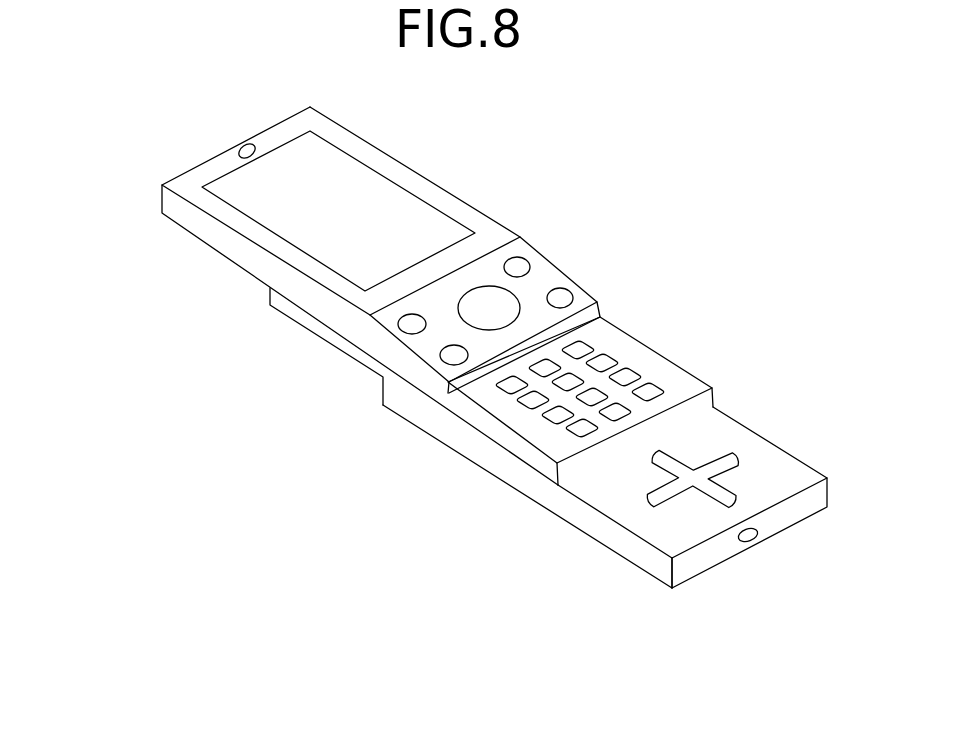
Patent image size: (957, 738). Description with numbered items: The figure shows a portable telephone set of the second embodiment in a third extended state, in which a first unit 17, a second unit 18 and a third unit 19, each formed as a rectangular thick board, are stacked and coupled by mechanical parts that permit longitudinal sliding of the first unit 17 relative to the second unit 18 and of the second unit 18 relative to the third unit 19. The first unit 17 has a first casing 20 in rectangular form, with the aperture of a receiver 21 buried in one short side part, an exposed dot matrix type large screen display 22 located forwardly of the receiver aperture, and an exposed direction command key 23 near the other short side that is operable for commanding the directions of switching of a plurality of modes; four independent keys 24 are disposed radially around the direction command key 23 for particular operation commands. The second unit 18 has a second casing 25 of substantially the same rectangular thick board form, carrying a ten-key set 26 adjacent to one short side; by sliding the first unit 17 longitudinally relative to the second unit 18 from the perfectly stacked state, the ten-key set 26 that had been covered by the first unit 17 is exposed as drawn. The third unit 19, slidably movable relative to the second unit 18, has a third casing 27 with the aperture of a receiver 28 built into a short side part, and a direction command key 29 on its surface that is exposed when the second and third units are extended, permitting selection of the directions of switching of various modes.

The first unit 17 is at (184, 159).
The second unit 18 is at (313, 339).
The third unit 19 is at (468, 464).
The first casing 20 is at (358, 141).
The receiver 21 is at (253, 145).
The display 22 is at (408, 206).
The direction command key 23 is at (507, 302).
The function keys 24 is at (521, 266).
The second casing 25 is at (704, 401).
The ten-key set 26 is at (632, 372).
The third casing 27 is at (687, 585).
The receiver 28 is at (753, 541).
The direction command key 29 is at (717, 463).